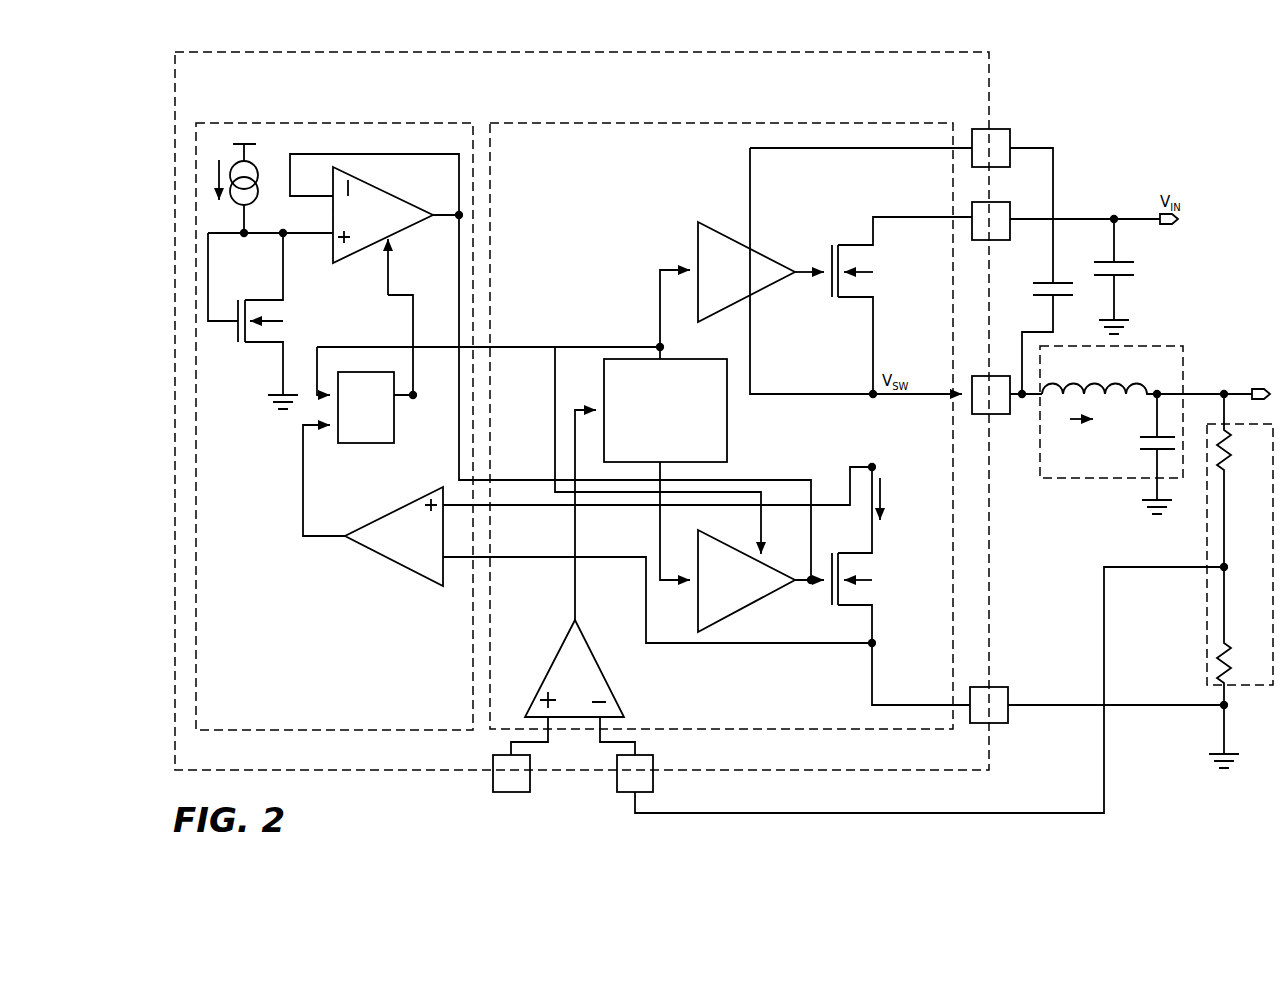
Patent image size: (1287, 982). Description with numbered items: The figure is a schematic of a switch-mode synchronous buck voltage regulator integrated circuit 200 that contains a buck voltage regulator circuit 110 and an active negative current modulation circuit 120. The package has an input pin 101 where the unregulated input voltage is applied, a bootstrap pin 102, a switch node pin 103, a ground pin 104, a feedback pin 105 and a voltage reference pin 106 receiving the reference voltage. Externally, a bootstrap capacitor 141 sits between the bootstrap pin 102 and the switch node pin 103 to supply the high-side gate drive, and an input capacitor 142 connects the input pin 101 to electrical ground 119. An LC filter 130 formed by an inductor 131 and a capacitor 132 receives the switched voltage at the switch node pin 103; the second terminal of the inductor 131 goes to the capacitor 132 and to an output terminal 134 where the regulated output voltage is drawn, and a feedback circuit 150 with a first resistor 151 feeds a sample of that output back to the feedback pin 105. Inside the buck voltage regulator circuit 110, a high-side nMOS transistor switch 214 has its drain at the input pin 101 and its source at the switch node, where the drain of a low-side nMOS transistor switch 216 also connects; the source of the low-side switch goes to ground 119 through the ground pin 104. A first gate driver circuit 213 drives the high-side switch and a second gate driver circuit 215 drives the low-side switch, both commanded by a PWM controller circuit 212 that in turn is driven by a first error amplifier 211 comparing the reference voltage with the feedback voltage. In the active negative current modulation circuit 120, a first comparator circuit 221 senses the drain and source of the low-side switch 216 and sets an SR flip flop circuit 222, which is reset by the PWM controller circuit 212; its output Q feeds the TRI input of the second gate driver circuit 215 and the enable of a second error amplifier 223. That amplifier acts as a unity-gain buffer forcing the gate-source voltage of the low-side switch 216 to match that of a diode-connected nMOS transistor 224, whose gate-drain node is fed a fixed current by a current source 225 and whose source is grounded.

The switch-mode synchronous buck voltage regulator integrated circuit 200 is at (1188, 108).
The buck voltage regulator circuit 110 is at (721, 426).
The active negative current modulation circuit 120 is at (334, 426).
The input pin 101 is at (1000, 203).
The bootstrap pin 102 is at (1012, 130).
The switch node pin 103 is at (1015, 415).
The ground pin 104 is at (1008, 718).
The feedback pin 105 is at (617, 790).
The voltage reference pin 106 is at (505, 793).
The electrical ground 119 is at (270, 410).
The LC filter 130 is at (1062, 480).
The inductor 131 is at (1118, 382).
The capacitor 132 is at (1148, 447).
The output terminal 134 is at (1262, 386).
The bootstrap capacitor 141 is at (1062, 300).
The input capacitor 142 is at (1125, 278).
The feedback circuit 150 is at (1207, 585).
The first resistor 151 is at (1232, 448).
The first error amplifier 211 is at (600, 660).
The PWM controller circuit 212 is at (651, 445).
The first gate driver circuit 213 is at (770, 248).
The high-side nMOS transistor switch 214 is at (855, 299).
The second gate driver circuit 215 is at (745, 612).
The low-side nMOS transistor switch 216 is at (860, 563).
The first comparator circuit 221 is at (400, 565).
The SR flip flop circuit 222 is at (368, 446).
The second error amplifier 223 is at (378, 182).
The nMOS transistor 224 is at (258, 350).
The current source 225 is at (258, 165).